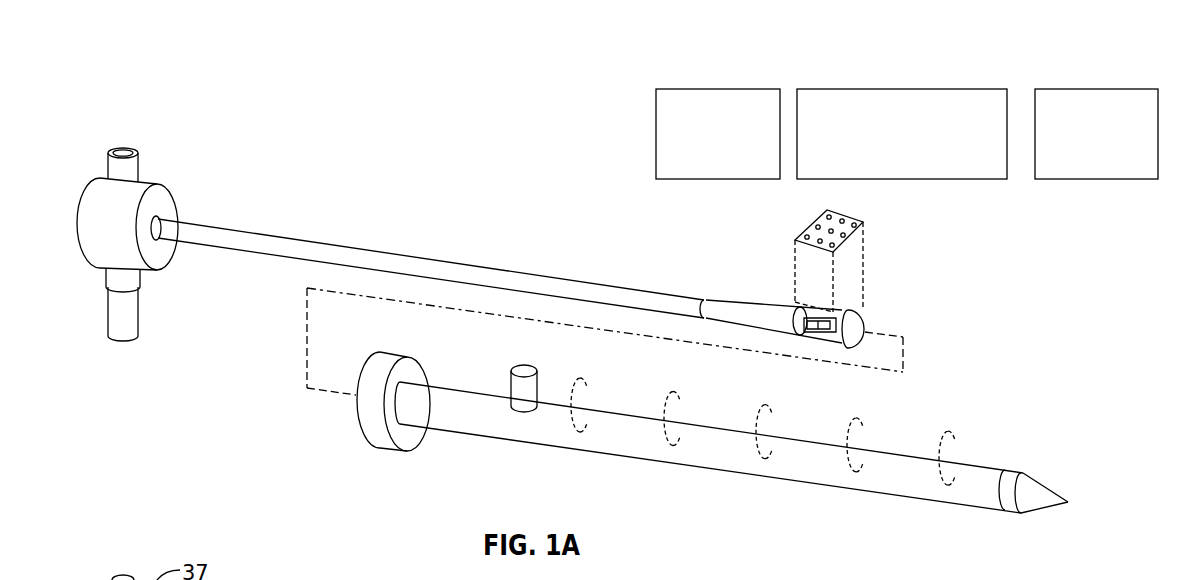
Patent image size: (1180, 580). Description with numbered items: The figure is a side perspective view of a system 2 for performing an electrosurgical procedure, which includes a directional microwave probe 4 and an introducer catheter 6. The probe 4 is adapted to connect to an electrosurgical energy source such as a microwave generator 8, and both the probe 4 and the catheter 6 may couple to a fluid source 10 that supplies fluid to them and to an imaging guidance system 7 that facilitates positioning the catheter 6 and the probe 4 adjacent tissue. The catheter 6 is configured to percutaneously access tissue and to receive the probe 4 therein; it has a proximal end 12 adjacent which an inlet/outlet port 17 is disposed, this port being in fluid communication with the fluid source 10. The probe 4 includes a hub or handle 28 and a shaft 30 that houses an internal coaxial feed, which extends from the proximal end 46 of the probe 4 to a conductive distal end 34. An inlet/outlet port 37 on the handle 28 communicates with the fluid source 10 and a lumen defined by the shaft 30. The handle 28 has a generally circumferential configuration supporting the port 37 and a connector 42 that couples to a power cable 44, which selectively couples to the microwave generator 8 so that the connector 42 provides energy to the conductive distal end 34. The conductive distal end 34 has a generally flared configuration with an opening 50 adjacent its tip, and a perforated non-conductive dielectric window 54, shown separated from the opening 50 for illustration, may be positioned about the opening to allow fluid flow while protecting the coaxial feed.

The system 2 is at (880, 432).
The directional microwave probe 4 is at (573, 258).
The catheter 6 is at (998, 453).
The imaging guidance system 7 is at (1098, 89).
The microwave generator 8 is at (913, 89).
The fluid source 10 is at (717, 89).
The proximal end 12 is at (355, 427).
The inlet/outlet port 17 is at (523, 370).
The handle 28 is at (145, 176).
The shaft 30 is at (450, 262).
The conductive distal end 34 is at (765, 290).
The inlet/outlet port 37 is at (118, 150).
The connector 42 is at (140, 275).
The power cable 44 is at (140, 313).
The proximal end 46 is at (162, 220).
The opening 50 is at (857, 295).
The non-conductive dielectric window 54 is at (808, 232).